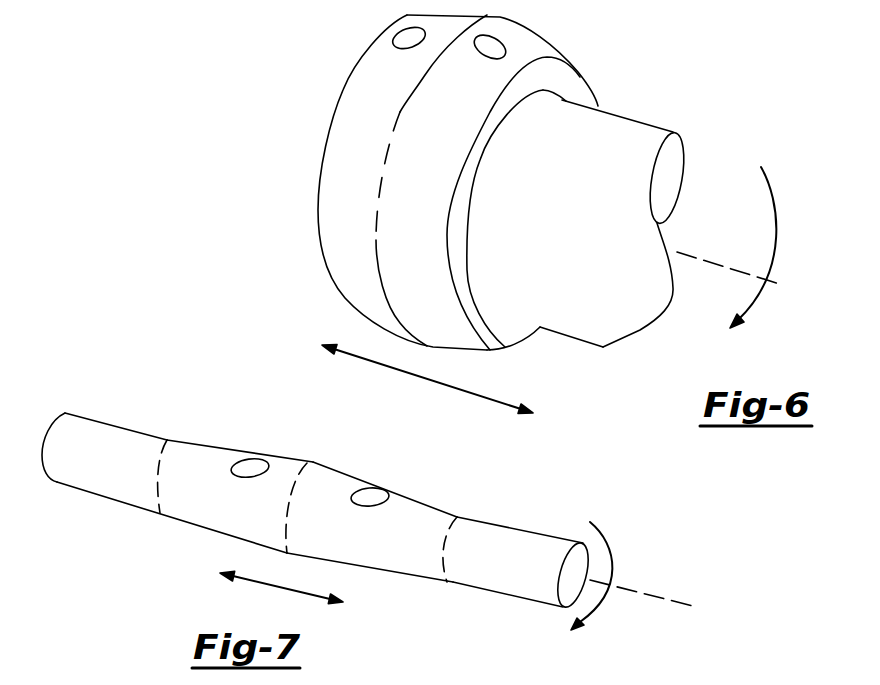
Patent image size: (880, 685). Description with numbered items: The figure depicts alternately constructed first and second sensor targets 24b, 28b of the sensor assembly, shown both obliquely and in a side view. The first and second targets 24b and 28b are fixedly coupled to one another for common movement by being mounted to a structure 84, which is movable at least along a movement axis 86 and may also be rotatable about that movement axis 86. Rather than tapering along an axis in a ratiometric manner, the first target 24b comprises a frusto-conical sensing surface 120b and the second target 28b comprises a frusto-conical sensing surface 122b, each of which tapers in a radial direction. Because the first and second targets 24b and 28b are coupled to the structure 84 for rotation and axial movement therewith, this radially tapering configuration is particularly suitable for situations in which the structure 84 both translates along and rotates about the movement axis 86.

In FIG. 6, the first target 24b is at (352, 112).
In FIG. 7, the first target 24b is at (170, 448).
In FIG. 6, the second target 28b is at (452, 88).
In FIG. 7, the second target 28b is at (428, 512).
In FIG. 6, the structure 84 is at (637, 147).
In FIG. 7, the structure 84 is at (87, 423).
In FIG. 6, the movement axis 86 is at (719, 263).
In FIG. 7, the movement axis 86 is at (657, 593).
In FIG. 6, the frusto-conical sensing surface 120b is at (340, 267).
In FIG. 7, the frusto-conical sensing surface 120b is at (247, 502).
In FIG. 6, the frusto-conical sensing surface 122b is at (425, 312).
In FIG. 7, the frusto-conical sensing surface 122b is at (397, 558).